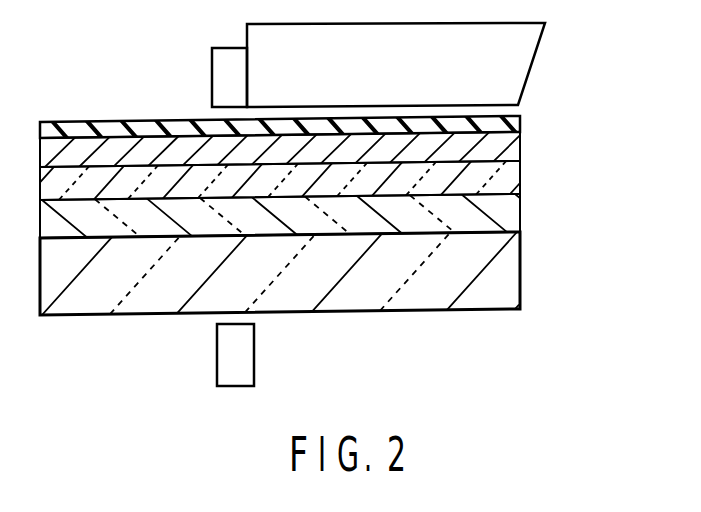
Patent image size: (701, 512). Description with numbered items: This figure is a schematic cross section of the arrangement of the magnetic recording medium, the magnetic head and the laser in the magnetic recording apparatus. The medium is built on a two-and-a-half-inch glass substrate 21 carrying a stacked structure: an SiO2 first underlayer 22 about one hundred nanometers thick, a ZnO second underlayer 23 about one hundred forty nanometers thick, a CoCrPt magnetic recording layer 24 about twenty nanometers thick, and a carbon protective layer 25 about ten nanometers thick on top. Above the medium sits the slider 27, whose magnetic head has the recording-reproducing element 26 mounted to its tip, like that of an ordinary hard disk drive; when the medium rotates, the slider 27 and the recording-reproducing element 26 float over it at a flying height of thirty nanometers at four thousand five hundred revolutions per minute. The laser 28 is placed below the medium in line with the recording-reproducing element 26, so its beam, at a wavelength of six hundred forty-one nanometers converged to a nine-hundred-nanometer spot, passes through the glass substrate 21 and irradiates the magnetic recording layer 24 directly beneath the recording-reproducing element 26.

The glass substrate 21 is at (522, 266).
The first underlayer 22 is at (522, 207).
The second underlayer 23 is at (522, 171).
The magnetic recording layer 24 is at (522, 140).
The protective layer 25 is at (522, 117).
The recording-reproducing element 26 is at (211, 76).
The slider 27 is at (535, 64).
The laser 28 is at (217, 377).